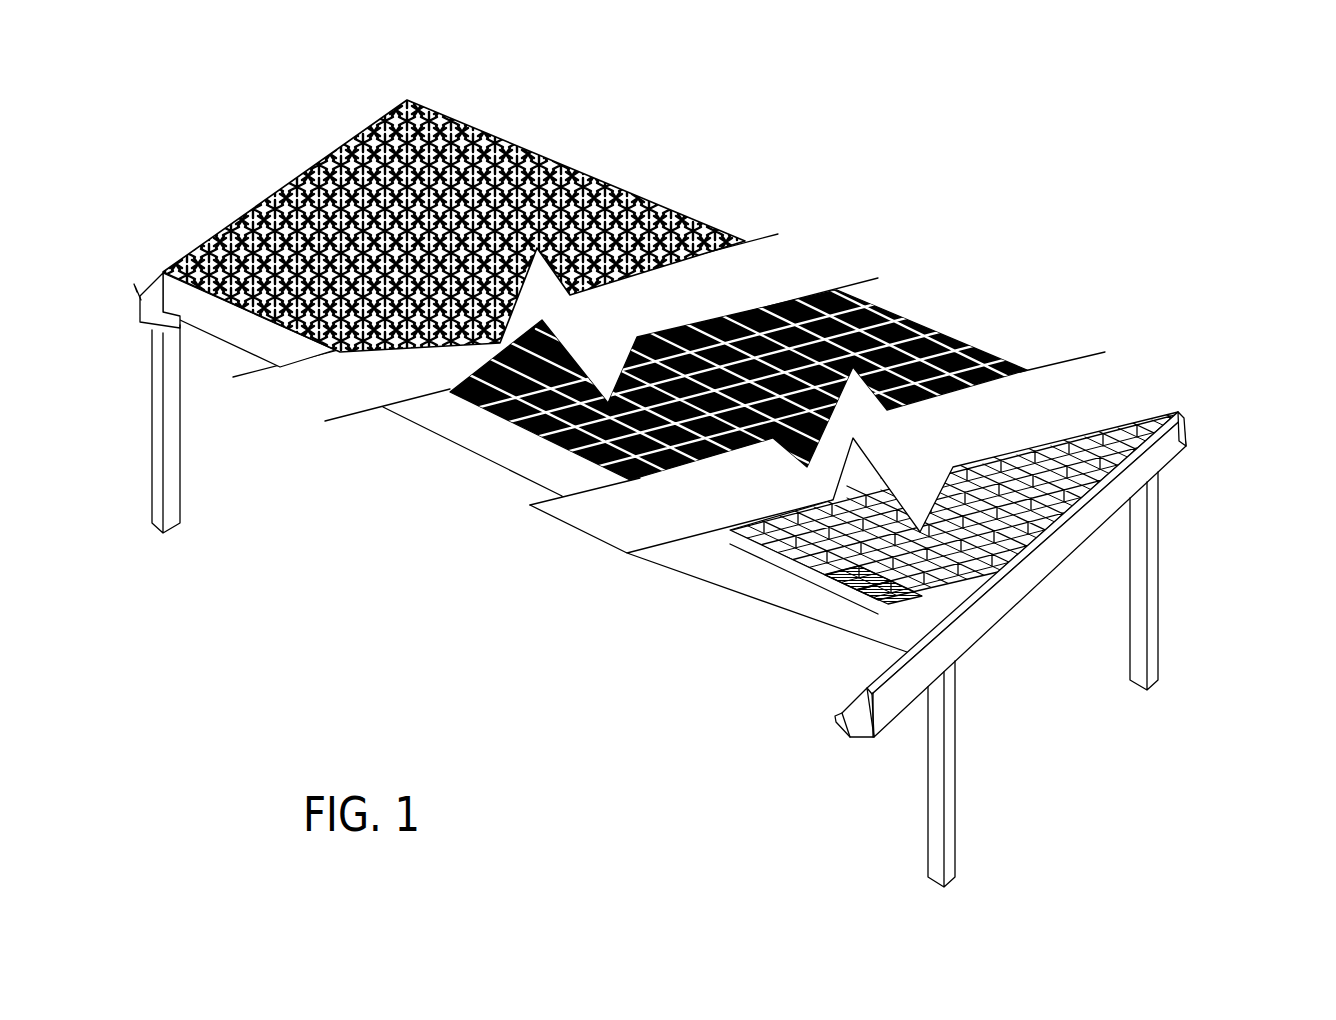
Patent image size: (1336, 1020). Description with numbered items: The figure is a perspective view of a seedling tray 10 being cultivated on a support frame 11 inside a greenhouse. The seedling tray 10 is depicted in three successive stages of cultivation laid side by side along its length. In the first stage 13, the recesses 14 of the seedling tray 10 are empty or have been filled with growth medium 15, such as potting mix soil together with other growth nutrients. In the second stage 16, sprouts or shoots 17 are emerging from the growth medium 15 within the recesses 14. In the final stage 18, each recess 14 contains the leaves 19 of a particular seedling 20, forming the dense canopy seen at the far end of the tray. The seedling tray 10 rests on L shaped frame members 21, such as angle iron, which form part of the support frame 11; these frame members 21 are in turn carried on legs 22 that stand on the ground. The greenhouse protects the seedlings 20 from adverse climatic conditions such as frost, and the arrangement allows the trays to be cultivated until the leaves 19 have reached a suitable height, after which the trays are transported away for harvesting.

The seedling tray 10 is at (845, 214).
The support frame 11 is at (694, 539).
The stage 13 is at (772, 606).
The recesses 14 is at (1103, 445).
The growth medium 15 is at (865, 590).
The stage 16 is at (948, 248).
The sprouts or shoots 17 is at (967, 340).
The stage 18 is at (600, 150).
The leaves 19 is at (407, 102).
The seedling 20 is at (502, 136).
The L shaped frame members 21 is at (160, 284).
The legs 22 is at (178, 482).